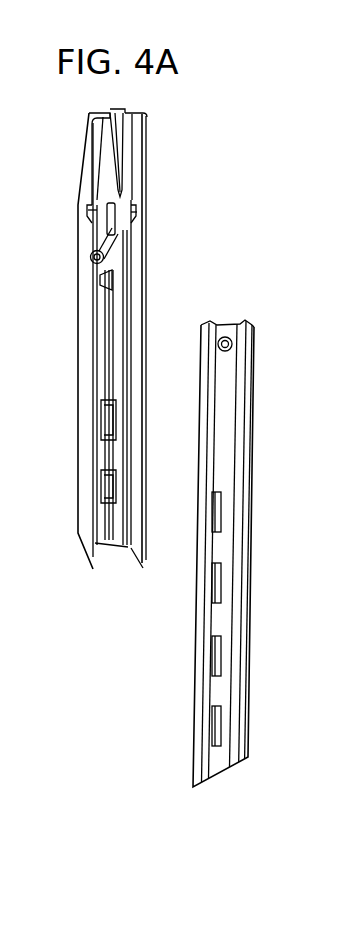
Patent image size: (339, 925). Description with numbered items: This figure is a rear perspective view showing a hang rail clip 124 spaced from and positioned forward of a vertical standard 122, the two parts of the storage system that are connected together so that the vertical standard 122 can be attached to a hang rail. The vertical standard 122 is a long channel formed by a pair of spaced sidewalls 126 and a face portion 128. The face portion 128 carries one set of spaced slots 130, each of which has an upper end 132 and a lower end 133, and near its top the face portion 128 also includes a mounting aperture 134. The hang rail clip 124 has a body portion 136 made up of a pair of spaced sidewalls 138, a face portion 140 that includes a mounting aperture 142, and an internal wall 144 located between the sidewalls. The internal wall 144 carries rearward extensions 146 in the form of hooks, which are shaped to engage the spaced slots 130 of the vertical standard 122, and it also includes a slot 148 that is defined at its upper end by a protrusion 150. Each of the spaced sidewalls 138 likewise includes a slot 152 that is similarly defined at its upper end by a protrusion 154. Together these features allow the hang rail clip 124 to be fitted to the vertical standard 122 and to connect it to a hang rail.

The vertical standard 122 is at (216, 547).
The hang rail clip 124 is at (114, 358).
The spaced sidewalls 126 is at (202, 666).
The face portion 128 is at (222, 758).
The spaced slots 130 is at (224, 510).
The upper end 132 is at (217, 490).
The lower end 133 is at (220, 532).
The mounting aperture 134 is at (228, 338).
The body portion 136 is at (148, 290).
The spaced sidewalls 138 is at (85, 322).
The face portion 140 is at (105, 112).
The mounting aperture 142 is at (90, 256).
The internal wall 144 is at (115, 138).
The rearward extensions 146 is at (105, 422).
The slot 148 is at (110, 227).
The protrusion 150 is at (120, 197).
The slot 152 is at (97, 217).
The protrusion 154 is at (95, 210).